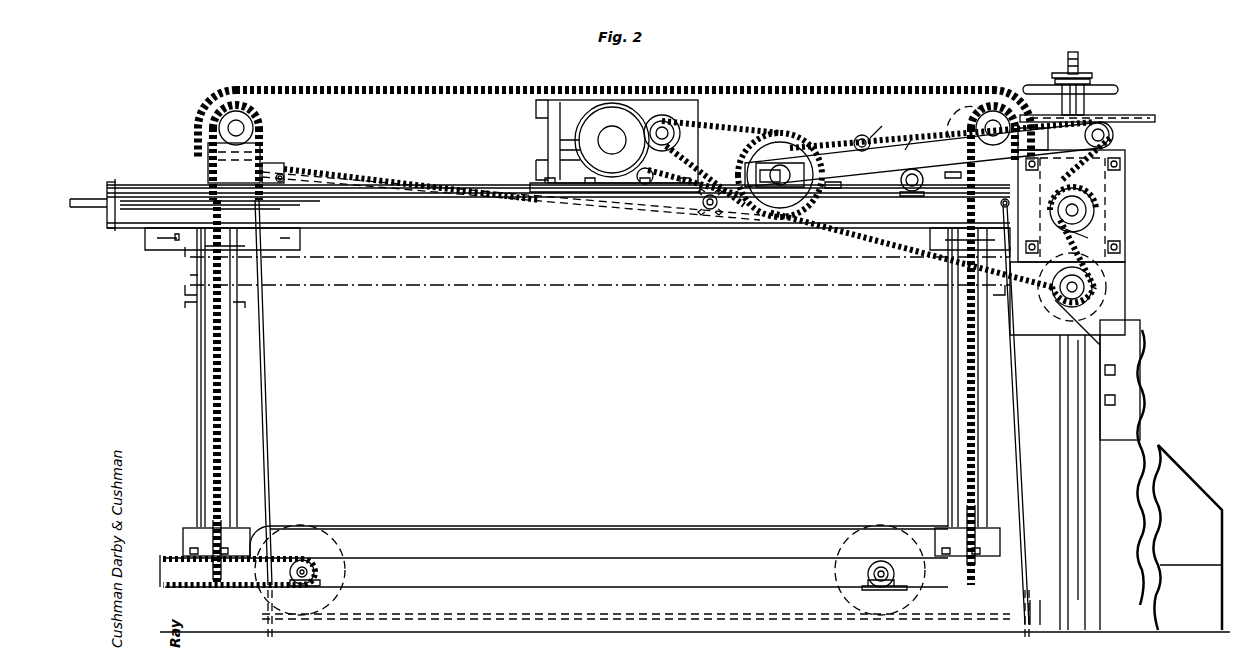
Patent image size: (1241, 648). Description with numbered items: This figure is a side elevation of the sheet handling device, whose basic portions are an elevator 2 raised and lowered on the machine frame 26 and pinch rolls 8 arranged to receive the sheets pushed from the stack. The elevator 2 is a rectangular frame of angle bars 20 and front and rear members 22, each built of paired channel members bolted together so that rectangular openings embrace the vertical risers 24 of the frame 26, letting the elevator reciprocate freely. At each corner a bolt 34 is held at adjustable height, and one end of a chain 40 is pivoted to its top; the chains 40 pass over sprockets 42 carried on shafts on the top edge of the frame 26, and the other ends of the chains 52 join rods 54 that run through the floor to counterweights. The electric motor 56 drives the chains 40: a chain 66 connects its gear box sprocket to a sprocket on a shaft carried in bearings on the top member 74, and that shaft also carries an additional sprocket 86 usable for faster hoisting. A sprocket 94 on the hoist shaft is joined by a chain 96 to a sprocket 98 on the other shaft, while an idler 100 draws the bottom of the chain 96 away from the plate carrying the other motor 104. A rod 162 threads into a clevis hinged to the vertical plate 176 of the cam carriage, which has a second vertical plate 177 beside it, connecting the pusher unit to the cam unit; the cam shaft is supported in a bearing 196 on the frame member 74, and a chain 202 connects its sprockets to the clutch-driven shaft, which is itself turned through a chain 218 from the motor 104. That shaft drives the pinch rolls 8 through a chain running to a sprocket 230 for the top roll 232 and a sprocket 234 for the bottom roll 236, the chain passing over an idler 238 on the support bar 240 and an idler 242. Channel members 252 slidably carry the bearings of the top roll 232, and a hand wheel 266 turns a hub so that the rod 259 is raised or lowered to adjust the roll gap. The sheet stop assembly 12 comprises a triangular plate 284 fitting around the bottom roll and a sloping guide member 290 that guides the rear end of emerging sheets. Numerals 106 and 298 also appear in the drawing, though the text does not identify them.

The elevator 2 is at (452, 520).
The pinch rolls 8 is at (1096, 212).
The sheet stop assembly 12 is at (1148, 393).
The angle bars 20 is at (940, 514).
The front and rear members 22 is at (258, 590).
The vertical risers 24 is at (238, 422).
The frame 26 is at (445, 234).
The bolt 34 is at (208, 508).
The chain 40 is at (190, 402).
The sprockets 42 is at (252, 115).
The other ends of the chains 52 is at (264, 186).
The rods 54 is at (1012, 424).
The electric motor 56 is at (545, 110).
The chain 66 is at (720, 150).
The top member 74 is at (540, 228).
The additional sprocket 86 is at (1157, 118).
The sprocket 94 is at (975, 94).
The chain 96 is at (440, 82).
The sprocket 98 is at (215, 100).
The idler 100 is at (708, 212).
The motor 104 is at (612, 115).
The conveyor 106 is at (694, 508).
The rod 162 is at (82, 185).
The vertical plate member 176 is at (887, 118).
The vertical plate member 177 is at (905, 133).
The bearing 196 is at (925, 192).
The chain 202 is at (862, 135).
The chain 218 is at (757, 128).
The sprocket 230 is at (1088, 238).
The top roll 232 is at (1110, 170).
The sprocket 234 is at (1105, 290).
The bottom roll 236 is at (1100, 305).
The idler 238 is at (966, 102).
The support bar 240 is at (868, 180).
The idler 242 is at (1104, 130).
The channel members 252 is at (1122, 200).
The rod 259 is at (1075, 52).
The hand wheel 266 is at (1115, 85).
The triangular plate 284 is at (1204, 452).
The sloping guide member 290 is at (1130, 352).
The guide 298 is at (128, 158).